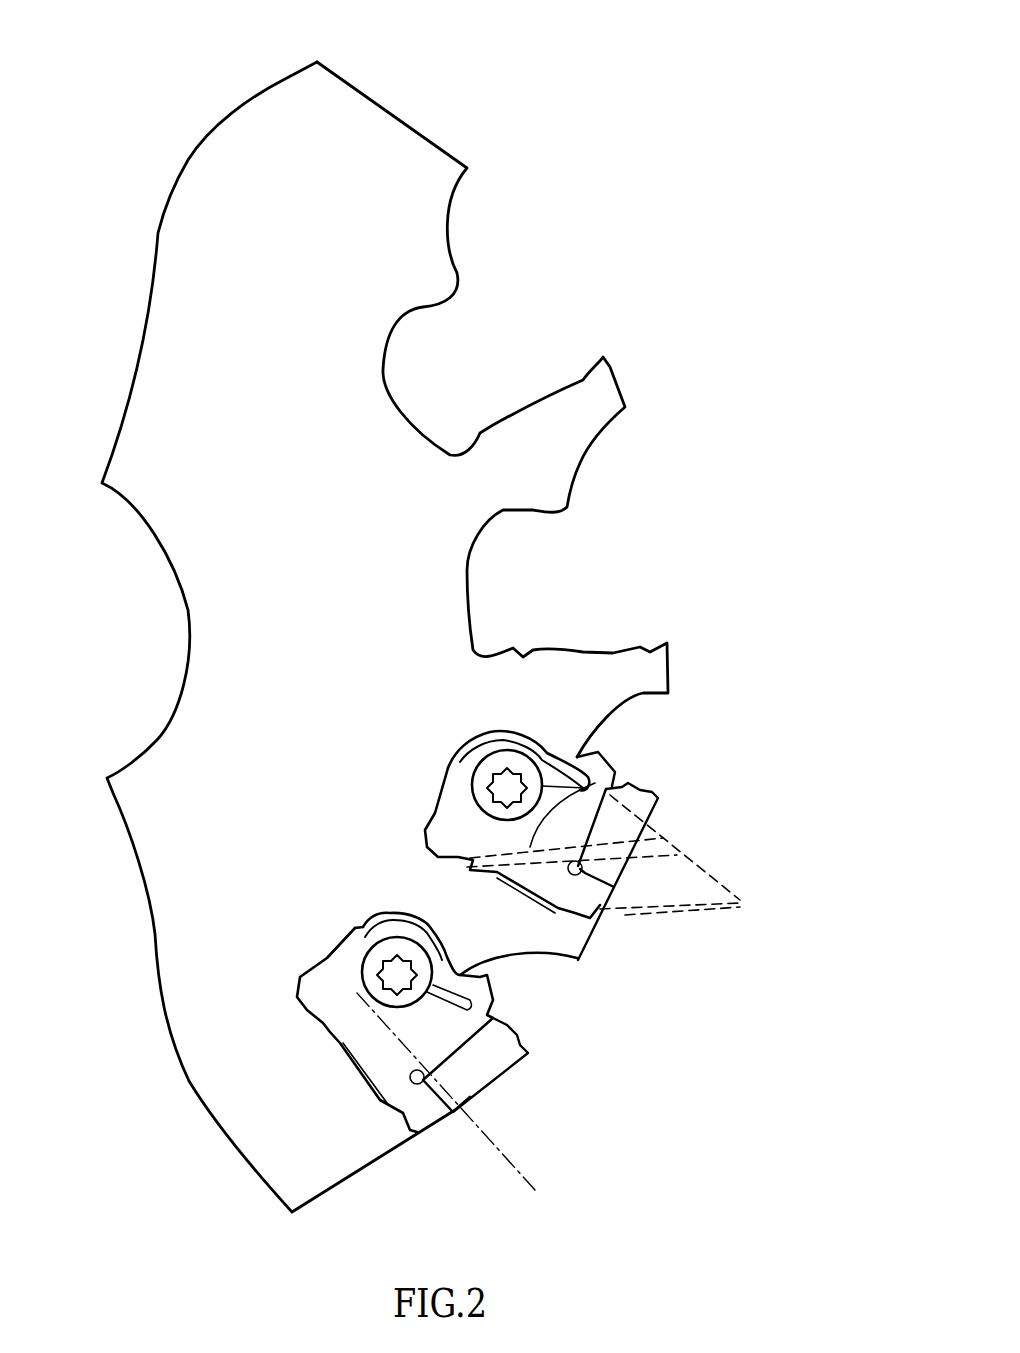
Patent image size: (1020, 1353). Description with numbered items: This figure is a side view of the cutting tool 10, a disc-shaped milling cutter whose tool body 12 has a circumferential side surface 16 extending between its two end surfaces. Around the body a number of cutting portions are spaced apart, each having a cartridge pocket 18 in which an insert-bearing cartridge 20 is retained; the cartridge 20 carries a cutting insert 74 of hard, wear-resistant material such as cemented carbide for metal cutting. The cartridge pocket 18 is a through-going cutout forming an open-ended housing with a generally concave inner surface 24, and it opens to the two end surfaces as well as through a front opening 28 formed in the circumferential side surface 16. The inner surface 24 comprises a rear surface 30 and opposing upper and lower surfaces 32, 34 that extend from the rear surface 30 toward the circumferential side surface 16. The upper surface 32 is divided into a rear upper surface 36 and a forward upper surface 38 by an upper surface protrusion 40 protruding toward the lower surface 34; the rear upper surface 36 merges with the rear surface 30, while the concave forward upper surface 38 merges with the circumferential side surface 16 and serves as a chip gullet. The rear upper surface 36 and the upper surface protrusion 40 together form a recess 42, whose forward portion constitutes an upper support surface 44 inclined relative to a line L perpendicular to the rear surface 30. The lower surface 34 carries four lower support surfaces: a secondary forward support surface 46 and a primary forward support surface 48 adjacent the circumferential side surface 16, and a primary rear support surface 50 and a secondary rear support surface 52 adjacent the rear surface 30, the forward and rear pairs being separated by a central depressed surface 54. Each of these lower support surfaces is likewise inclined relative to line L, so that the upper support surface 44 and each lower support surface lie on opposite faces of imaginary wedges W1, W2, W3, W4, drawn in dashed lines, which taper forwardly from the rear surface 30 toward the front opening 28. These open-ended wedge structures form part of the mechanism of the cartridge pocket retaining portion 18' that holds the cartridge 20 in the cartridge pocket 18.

The cutting tool 10 is at (702, 57).
The tool body 12 is at (393, 140).
The circumferential side surface 16 is at (623, 397).
The cartridge pocket 18 is at (660, 175).
The cartridge pocket retaining portion 18' is at (612, 550).
The cartridge 20 is at (483, 998).
The inner surface 24 is at (565, 635).
The front opening 28 is at (570, 243).
The rear surface 30 is at (432, 390).
The upper surface 32 is at (477, 292).
The lower surface 34 is at (533, 370).
The rear upper surface 36 is at (503, 510).
The forward upper surface 38 is at (590, 440).
The upper surface protrusion 40 is at (557, 515).
The recess 42 is at (483, 523).
The upper support surface 44 is at (425, 305).
The secondary forward support surface 46 is at (603, 360).
The primary forward support surface 48 is at (585, 378).
The primary rear support surface 50 is at (470, 433).
The secondary rear support surface 52 is at (495, 423).
The central depressed surface 54 is at (585, 650).
The cutting insert 74 is at (510, 1055).
The line L is at (518, 1165).
The imaginary wedge W1 is at (723, 888).
The imaginary wedge W2 is at (693, 865).
The imaginary wedge W3 is at (670, 850).
The imaginary wedge W4 is at (606, 788).